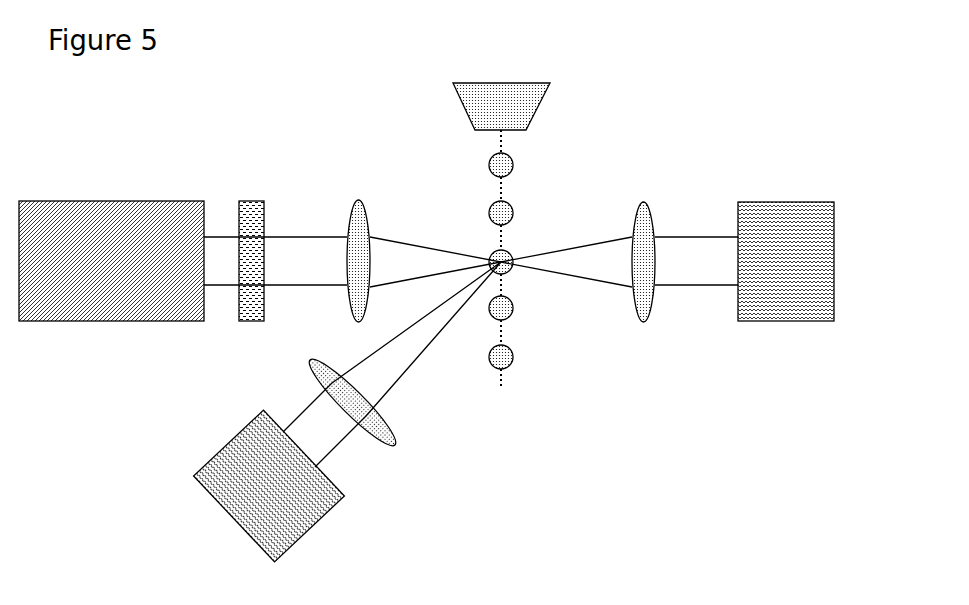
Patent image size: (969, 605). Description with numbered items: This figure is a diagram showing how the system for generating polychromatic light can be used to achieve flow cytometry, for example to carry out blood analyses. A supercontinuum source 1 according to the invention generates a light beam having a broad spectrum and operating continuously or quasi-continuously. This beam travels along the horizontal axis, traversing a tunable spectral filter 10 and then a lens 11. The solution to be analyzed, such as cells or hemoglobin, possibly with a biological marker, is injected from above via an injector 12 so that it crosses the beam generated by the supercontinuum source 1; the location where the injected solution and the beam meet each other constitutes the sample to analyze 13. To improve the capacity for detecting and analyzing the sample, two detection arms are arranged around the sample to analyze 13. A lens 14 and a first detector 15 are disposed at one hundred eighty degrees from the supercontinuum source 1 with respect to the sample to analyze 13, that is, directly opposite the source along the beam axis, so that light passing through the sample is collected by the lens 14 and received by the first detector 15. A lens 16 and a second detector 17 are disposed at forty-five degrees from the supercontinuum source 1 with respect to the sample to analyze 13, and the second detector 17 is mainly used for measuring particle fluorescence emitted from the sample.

The supercontinuum source 1 is at (97, 217).
The tunable spectral filter 10 is at (252, 212).
The lens 11 is at (360, 213).
The injector 12 is at (497, 92).
The sample to analyze 13 is at (508, 271).
The lens 14 is at (645, 212).
The first detector 15 is at (768, 212).
The lens 16 is at (373, 427).
The second detector 17 is at (292, 515).